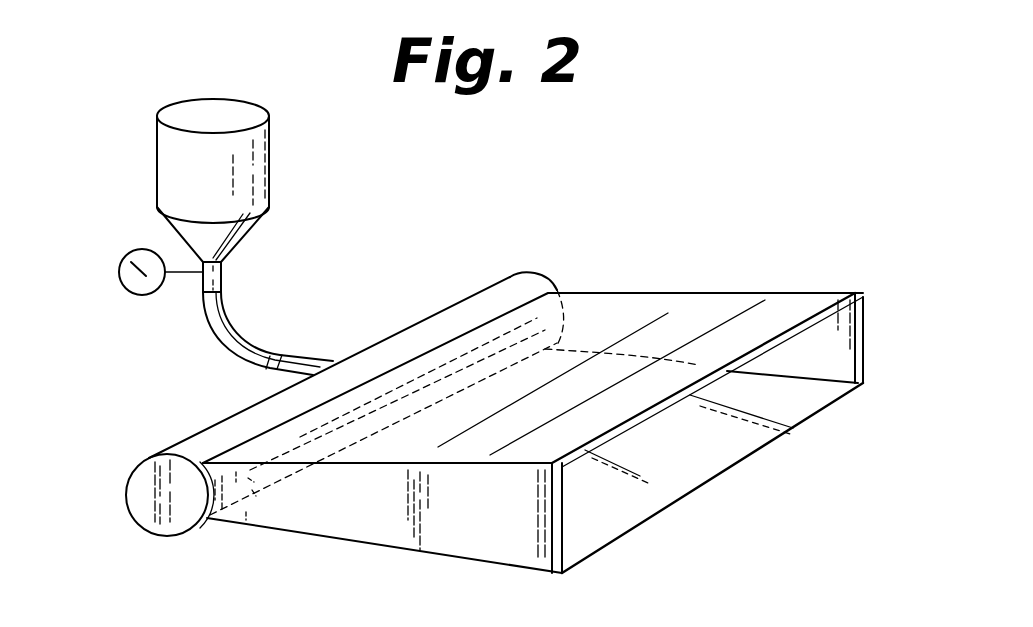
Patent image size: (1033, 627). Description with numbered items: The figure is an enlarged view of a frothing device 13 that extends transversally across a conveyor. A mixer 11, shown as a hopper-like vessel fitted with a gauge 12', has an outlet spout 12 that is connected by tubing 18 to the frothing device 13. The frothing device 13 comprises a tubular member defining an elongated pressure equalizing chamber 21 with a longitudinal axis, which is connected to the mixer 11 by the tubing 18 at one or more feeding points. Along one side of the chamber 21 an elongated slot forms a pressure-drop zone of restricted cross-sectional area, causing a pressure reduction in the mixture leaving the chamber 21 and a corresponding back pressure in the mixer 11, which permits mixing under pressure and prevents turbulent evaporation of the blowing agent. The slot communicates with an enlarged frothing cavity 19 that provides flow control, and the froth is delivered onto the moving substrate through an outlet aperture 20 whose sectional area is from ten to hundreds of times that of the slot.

The mixer 11 is at (164, 157).
The outlet spout 12 is at (241, 274).
The pressure gauge 12' is at (118, 272).
The frothing device 13 is at (613, 277).
The tubing 18 is at (233, 346).
The enlarged frothing cavity 19 is at (729, 302).
The outlet aperture 20 is at (741, 446).
The pressure equalizing chamber 21 is at (481, 302).